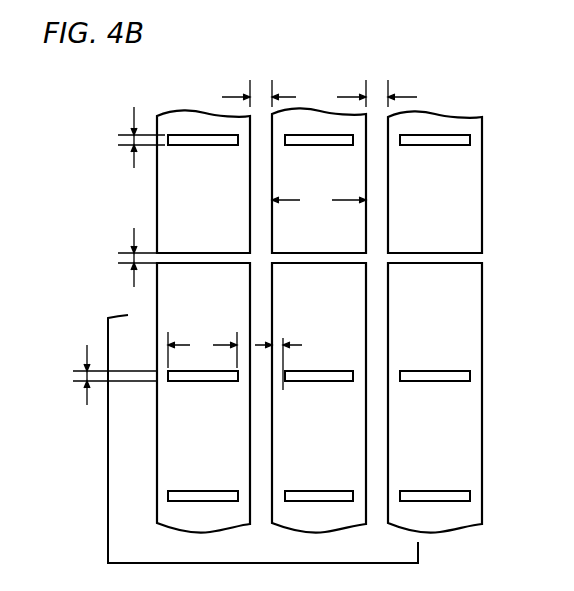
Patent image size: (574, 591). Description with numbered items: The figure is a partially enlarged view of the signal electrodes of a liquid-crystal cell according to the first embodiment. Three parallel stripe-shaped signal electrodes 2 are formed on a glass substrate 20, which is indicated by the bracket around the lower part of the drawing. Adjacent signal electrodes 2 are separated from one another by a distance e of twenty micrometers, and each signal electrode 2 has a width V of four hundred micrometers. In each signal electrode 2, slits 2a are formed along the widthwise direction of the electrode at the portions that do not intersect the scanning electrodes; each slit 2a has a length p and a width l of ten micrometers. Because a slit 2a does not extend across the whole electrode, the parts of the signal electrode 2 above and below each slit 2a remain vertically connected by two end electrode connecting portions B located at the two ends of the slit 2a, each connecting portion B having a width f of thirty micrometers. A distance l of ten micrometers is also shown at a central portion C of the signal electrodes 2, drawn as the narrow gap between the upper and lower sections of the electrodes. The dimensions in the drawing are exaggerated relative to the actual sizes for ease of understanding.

The signal electrode 2 is at (230, 521).
The slit 2a is at (198, 139).
The glass substrate 20 is at (118, 543).
The end electrode connecting portion B is at (284, 143).
The central portion C is at (482, 262).
The width of signal electrode V is at (319, 201).
The distance between adjacent signal electrodes e is at (319, 94).
The length of slit p is at (202, 350).
The width of connecting portion f is at (284, 342).
The width of slit l is at (120, 138).